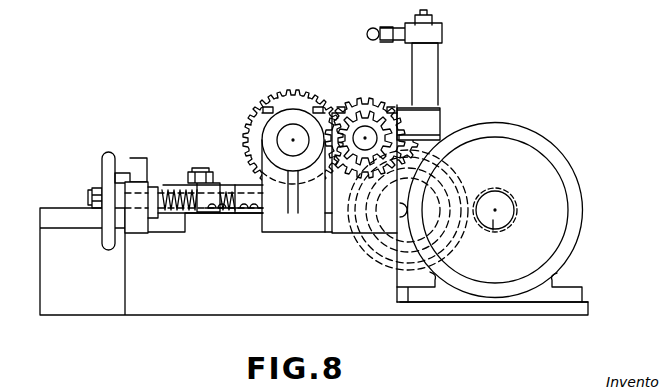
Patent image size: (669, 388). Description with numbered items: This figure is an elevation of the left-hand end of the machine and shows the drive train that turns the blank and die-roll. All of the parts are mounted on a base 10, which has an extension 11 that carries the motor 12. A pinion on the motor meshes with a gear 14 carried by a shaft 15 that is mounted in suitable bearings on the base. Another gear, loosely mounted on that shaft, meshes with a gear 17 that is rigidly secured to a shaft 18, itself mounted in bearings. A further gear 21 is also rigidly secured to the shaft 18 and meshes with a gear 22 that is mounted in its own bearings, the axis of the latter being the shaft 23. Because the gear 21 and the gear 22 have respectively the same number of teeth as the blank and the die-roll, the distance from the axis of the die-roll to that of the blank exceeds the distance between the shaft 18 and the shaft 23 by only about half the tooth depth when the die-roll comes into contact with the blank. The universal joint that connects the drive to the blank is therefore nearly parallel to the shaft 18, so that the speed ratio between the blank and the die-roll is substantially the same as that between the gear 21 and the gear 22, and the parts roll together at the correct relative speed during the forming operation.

The base 10 is at (198, 302).
The extension 11 is at (554, 303).
The motor 12 is at (552, 182).
The gear 14 is at (427, 150).
The shaft 15 is at (401, 210).
The gear 17 is at (361, 97).
The shaft 18 is at (369, 130).
The gear 21 is at (358, 110).
The gear 22 is at (283, 100).
The shaft 23 is at (283, 138).